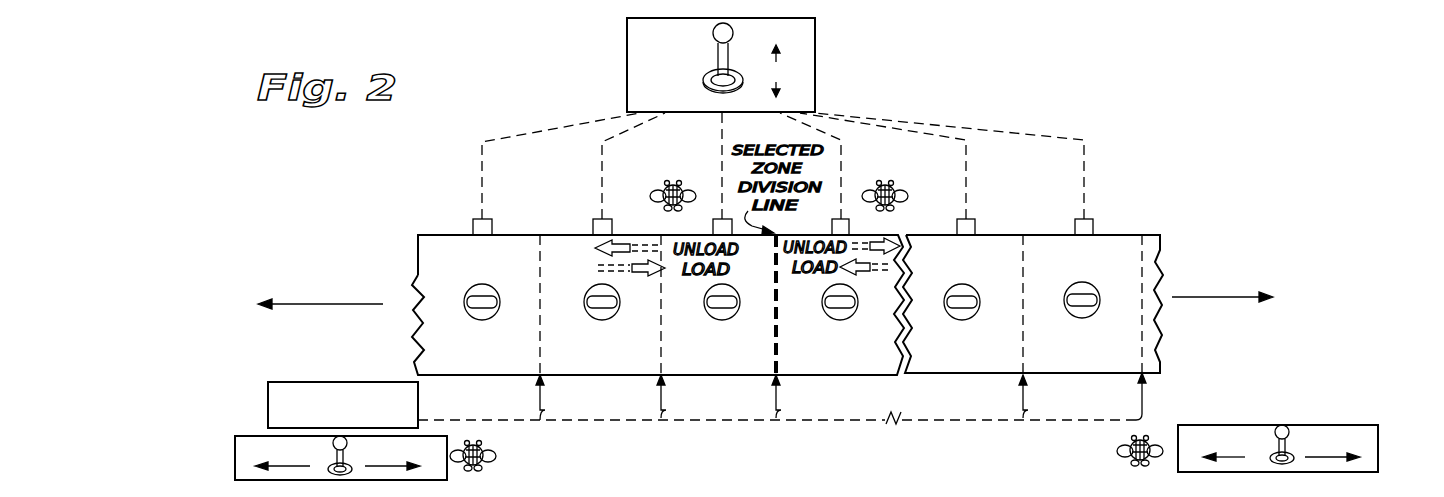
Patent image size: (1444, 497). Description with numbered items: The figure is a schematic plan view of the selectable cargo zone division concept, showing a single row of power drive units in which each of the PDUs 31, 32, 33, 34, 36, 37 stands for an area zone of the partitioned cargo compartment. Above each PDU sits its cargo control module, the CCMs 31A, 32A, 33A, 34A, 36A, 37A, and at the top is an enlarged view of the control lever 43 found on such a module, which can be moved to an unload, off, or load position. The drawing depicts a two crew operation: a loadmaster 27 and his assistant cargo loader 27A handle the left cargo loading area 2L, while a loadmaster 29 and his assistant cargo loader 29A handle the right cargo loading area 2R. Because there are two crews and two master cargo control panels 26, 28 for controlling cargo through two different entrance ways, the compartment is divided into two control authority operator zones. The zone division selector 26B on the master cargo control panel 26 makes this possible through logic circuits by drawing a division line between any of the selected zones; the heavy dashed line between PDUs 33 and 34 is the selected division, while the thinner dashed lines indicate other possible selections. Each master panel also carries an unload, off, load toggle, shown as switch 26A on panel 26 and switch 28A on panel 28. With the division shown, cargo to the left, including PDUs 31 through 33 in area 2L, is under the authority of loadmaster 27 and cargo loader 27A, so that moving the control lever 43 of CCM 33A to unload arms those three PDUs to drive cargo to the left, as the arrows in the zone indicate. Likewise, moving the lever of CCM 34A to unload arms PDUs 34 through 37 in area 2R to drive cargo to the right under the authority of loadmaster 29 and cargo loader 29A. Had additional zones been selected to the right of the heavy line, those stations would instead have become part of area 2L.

The control lever 43 is at (712, 33).
The cargo control module 31A is at (473, 226).
The cargo control module 32A is at (593, 226).
The cargo control module 33A is at (713, 227).
The cargo control module 34A is at (832, 219).
The cargo control module 36A is at (957, 227).
The cargo control module 37A is at (1075, 227).
The cargo loader 27A is at (690, 168).
The cargo loader 29A is at (906, 171).
The power drive unit 31 is at (494, 316).
The power drive unit 32 is at (614, 316).
The power drive unit 33 is at (734, 316).
The power drive unit 34 is at (852, 316).
The power drive unit 36 is at (974, 316).
The power drive unit 37 is at (1094, 314).
The left cargo loading area 2L is at (250, 302).
The right cargo loading area 2R is at (1273, 298).
The master cargo control panel 26 is at (262, 412).
The master cargo control panel toggle switch 26A is at (330, 463).
The zone division selector 26B is at (351, 382).
The loadmaster 27 is at (482, 468).
The loadmaster 29 is at (1122, 470).
The master cargo control panel 28 is at (1265, 418).
The master cargo control panel toggle switch 28A is at (1283, 425).